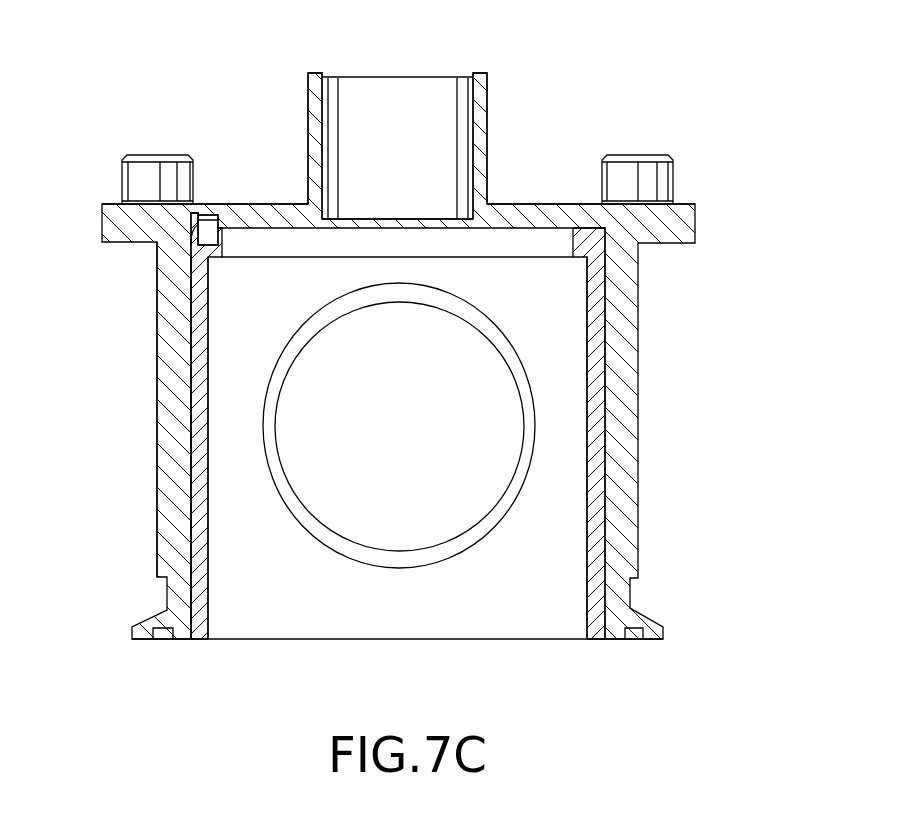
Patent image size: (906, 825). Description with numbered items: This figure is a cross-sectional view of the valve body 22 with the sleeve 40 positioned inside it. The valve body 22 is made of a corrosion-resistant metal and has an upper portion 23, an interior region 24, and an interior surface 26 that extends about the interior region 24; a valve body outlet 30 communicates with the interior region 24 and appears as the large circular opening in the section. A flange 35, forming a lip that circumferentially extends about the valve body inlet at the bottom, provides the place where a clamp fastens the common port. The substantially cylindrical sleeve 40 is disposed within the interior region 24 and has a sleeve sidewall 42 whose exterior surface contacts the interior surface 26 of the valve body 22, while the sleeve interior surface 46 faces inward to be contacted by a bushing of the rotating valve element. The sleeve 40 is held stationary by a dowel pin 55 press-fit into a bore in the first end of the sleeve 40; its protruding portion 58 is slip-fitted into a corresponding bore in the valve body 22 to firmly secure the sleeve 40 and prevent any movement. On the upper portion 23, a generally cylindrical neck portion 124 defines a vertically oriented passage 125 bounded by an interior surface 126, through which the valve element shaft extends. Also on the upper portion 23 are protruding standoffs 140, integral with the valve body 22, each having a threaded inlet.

The valve body 22 is at (638, 330).
The upper portion 23 is at (523, 205).
The interior region 24 is at (553, 600).
The interior surface 26 is at (262, 318).
The valve body outlet 30 is at (525, 440).
The flange 35 is at (663, 635).
The sleeve 40 is at (587, 312).
The sleeve sidewall 42 is at (597, 468).
The sleeve interior surface 46 is at (208, 577).
The dowel pin 55 is at (205, 235).
The protruding portion 58 is at (182, 204).
The neck portion 124 is at (490, 137).
The passage 125 is at (446, 96).
The interior surface 126 is at (322, 113).
The protruding standoff 140 is at (193, 182).